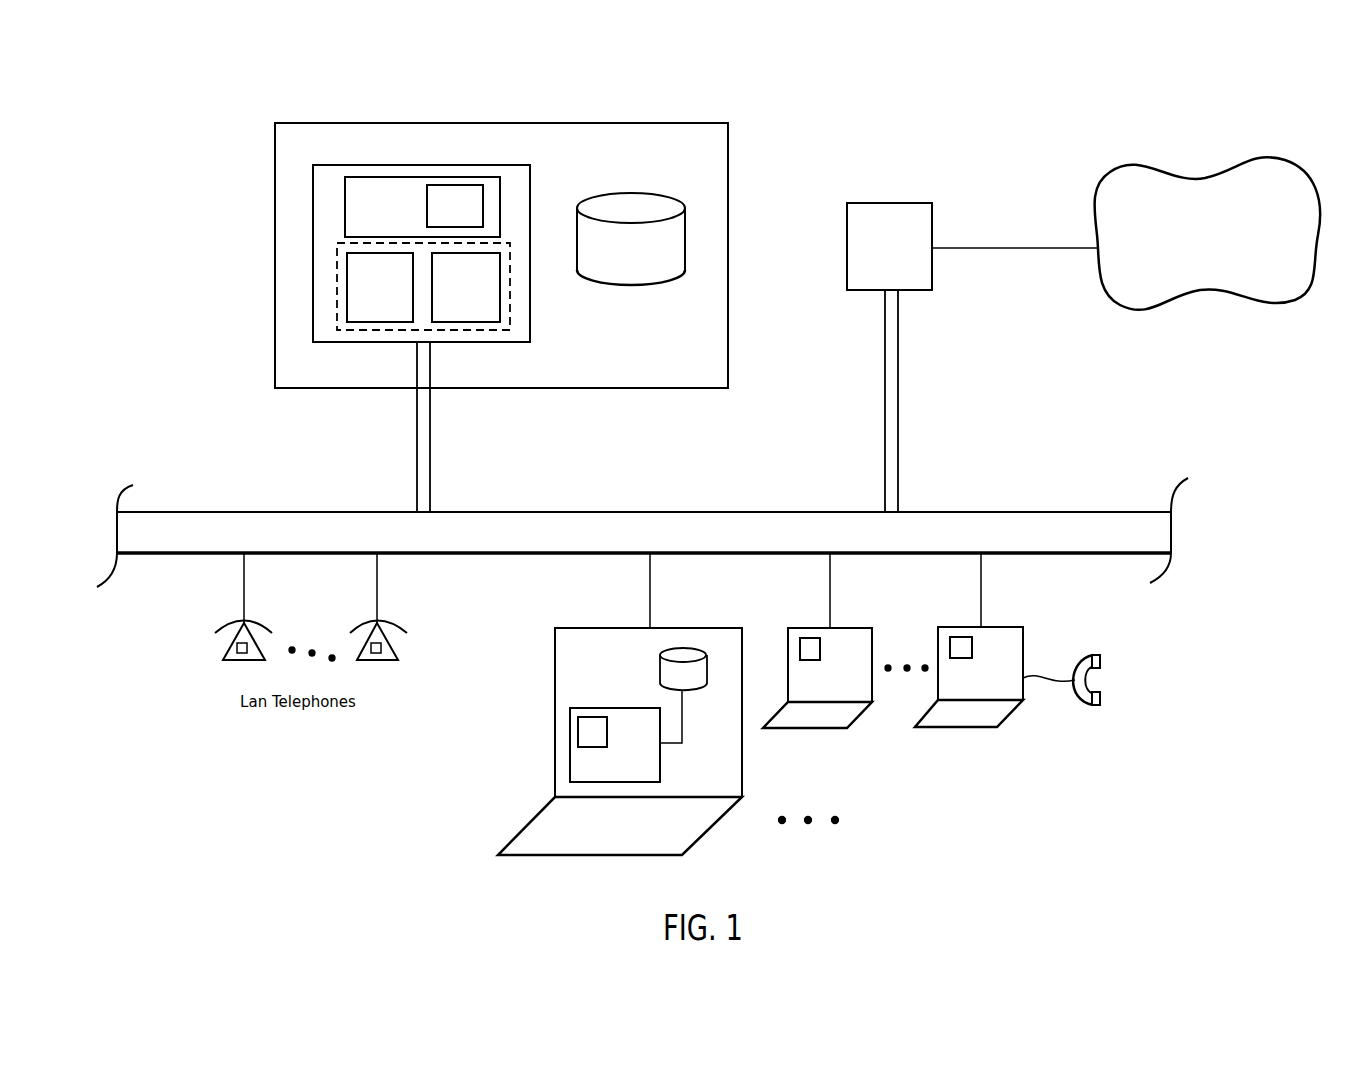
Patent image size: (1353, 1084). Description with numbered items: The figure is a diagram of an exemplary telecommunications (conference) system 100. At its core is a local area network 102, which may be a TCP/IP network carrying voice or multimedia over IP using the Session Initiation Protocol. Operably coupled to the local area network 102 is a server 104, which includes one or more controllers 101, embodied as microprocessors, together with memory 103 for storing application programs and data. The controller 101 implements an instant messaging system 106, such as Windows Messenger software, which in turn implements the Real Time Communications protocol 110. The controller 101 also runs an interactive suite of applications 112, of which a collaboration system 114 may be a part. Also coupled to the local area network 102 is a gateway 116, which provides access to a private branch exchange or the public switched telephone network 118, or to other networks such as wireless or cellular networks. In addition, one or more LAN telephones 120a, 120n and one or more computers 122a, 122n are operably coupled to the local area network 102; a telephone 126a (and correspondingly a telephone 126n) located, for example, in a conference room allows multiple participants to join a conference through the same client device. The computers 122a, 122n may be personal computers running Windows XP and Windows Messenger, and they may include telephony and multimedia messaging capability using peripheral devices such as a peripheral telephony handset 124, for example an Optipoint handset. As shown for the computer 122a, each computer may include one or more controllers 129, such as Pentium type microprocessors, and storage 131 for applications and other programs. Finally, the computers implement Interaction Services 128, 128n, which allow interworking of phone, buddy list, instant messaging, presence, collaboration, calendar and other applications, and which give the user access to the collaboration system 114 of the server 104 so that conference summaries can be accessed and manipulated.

The telecommunications system 100 is at (1180, 112).
The controller 101 is at (492, 165).
The local area network 102 is at (702, 543).
The memory 103 is at (625, 200).
The server 104 is at (640, 123).
The instant messaging system 106 is at (378, 332).
The Real Time Communications protocol 110 is at (447, 312).
The interactive suite of applications 112 is at (366, 215).
The collaboration system 114 is at (439, 215).
The gateway 116 is at (876, 258).
The public switched telephone network 118 is at (1257, 280).
The LAN telephone 120a is at (205, 620).
The LAN telephone 120n is at (412, 617).
The computer 122a is at (606, 725).
The computer 122n is at (972, 660).
The peripheral telephony handset 124 is at (1090, 707).
The telephone 126a is at (237, 657).
The telephone display 126n is at (385, 657).
The Interaction Services 128 is at (588, 748).
The Interaction Services 128n is at (972, 645).
The controller 129 is at (607, 708).
The storage 131 is at (693, 677).